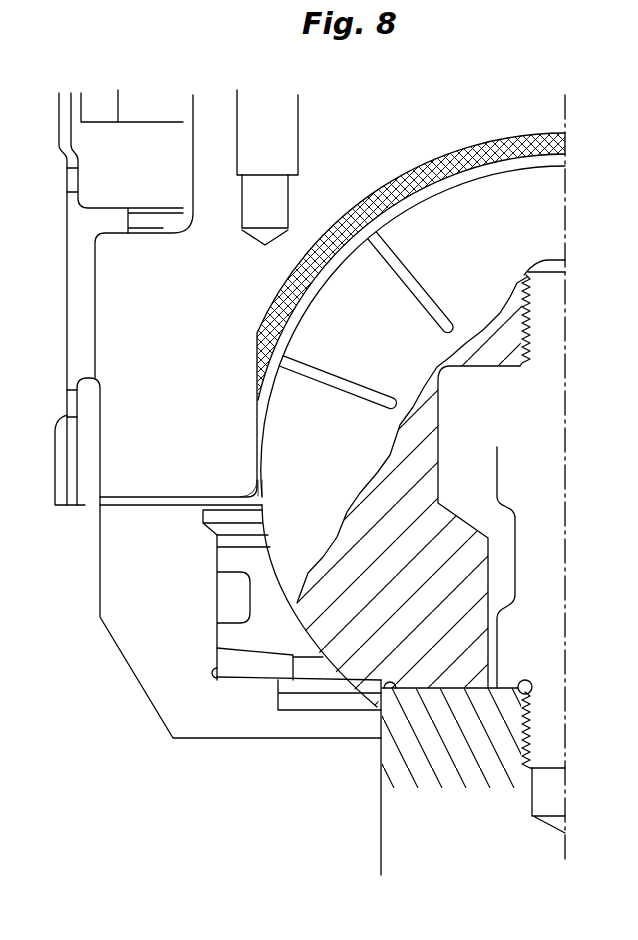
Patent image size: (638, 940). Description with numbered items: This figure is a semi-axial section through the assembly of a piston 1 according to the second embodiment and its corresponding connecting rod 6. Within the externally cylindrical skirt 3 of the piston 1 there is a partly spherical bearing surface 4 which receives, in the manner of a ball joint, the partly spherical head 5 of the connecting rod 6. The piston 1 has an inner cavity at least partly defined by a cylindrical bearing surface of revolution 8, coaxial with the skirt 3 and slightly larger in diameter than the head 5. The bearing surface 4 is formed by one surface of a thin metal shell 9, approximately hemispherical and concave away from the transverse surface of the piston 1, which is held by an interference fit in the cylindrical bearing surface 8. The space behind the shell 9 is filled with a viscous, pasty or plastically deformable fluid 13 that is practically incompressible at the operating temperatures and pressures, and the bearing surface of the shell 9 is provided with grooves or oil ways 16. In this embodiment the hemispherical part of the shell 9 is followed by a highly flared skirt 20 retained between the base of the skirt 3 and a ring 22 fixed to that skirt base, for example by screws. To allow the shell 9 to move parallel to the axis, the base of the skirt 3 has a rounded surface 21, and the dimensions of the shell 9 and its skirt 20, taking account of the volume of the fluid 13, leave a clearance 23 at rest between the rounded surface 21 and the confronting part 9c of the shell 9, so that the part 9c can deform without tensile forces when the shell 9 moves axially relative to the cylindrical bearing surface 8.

The piston 1 is at (60, 337).
The skirt 3 is at (75, 283).
The partly spherical bearing surface 4 is at (449, 144).
The partly spherical head 5 is at (396, 366).
The connecting rod 6 is at (372, 807).
The cylindrical bearing surface of revolution 8 is at (262, 380).
The thin metal shell 9 is at (315, 300).
The confronting part of the shell 9c is at (252, 503).
The fluid 13 is at (336, 232).
The grooves or oil ways 16 is at (425, 300).
The flared skirt 20 is at (137, 504).
The rounded surface 21 is at (247, 491).
The ring 22 is at (117, 558).
The clearance 23 is at (258, 490).